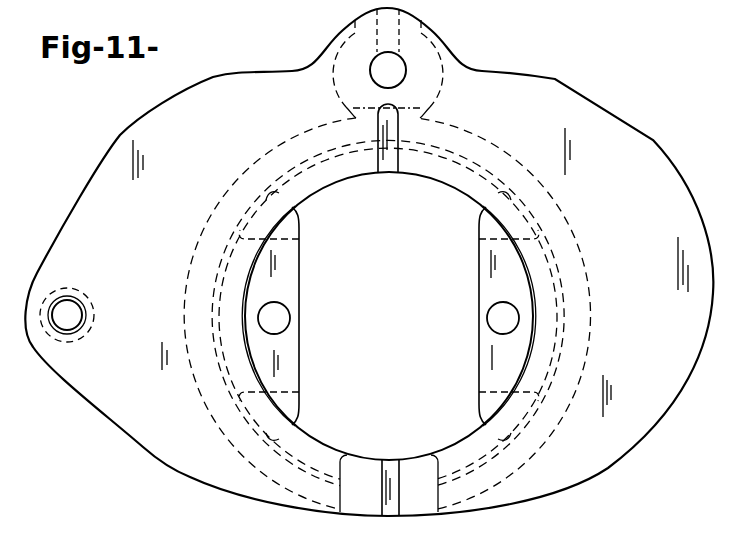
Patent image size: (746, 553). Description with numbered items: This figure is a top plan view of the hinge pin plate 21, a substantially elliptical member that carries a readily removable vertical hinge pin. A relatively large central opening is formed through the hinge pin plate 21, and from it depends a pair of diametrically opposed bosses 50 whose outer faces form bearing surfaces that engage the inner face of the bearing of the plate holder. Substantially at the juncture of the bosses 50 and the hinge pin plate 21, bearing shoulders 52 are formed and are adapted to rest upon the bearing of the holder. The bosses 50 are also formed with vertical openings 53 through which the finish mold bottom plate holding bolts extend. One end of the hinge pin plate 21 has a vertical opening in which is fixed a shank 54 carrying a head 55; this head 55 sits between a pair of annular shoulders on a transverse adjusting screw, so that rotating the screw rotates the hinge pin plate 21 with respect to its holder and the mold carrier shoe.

The hinge pin plate 21 is at (608, 468).
The bosses 50 is at (300, 357).
The bearing shoulders 52 is at (536, 449).
The vertical openings 53 is at (274, 318).
The shank 54 is at (74, 322).
The head 55 is at (77, 340).